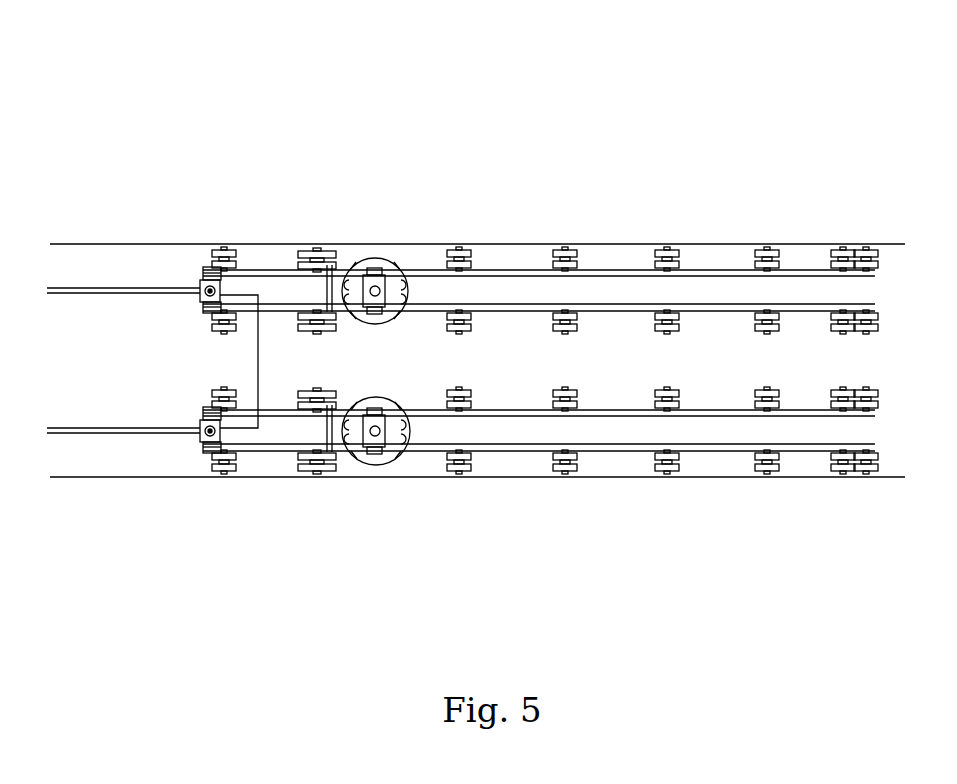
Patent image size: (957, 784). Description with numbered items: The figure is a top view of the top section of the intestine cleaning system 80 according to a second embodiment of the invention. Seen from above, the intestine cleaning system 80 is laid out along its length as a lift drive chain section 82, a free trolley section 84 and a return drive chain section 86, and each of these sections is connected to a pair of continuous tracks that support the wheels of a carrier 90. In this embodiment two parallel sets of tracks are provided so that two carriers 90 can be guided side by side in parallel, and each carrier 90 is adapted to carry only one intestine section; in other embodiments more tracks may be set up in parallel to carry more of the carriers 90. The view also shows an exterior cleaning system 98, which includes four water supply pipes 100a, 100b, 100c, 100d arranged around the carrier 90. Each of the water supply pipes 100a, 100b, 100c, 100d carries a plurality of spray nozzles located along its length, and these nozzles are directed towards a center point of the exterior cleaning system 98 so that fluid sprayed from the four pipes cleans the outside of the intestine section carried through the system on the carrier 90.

The intestine cleaning system 80 is at (588, 85).
The lift drive chain section 82 is at (197, 232).
The free trolley section 84 is at (338, 232).
The return drive chain section 86 is at (458, 232).
The carrier 90 is at (393, 318).
The exterior cleaning system 98 is at (375, 466).
The water supply pipe 100a is at (353, 455).
The water supply pipe 100b is at (350, 412).
The water supply pipe 100c is at (400, 405).
The water supply pipe 100d is at (402, 448).